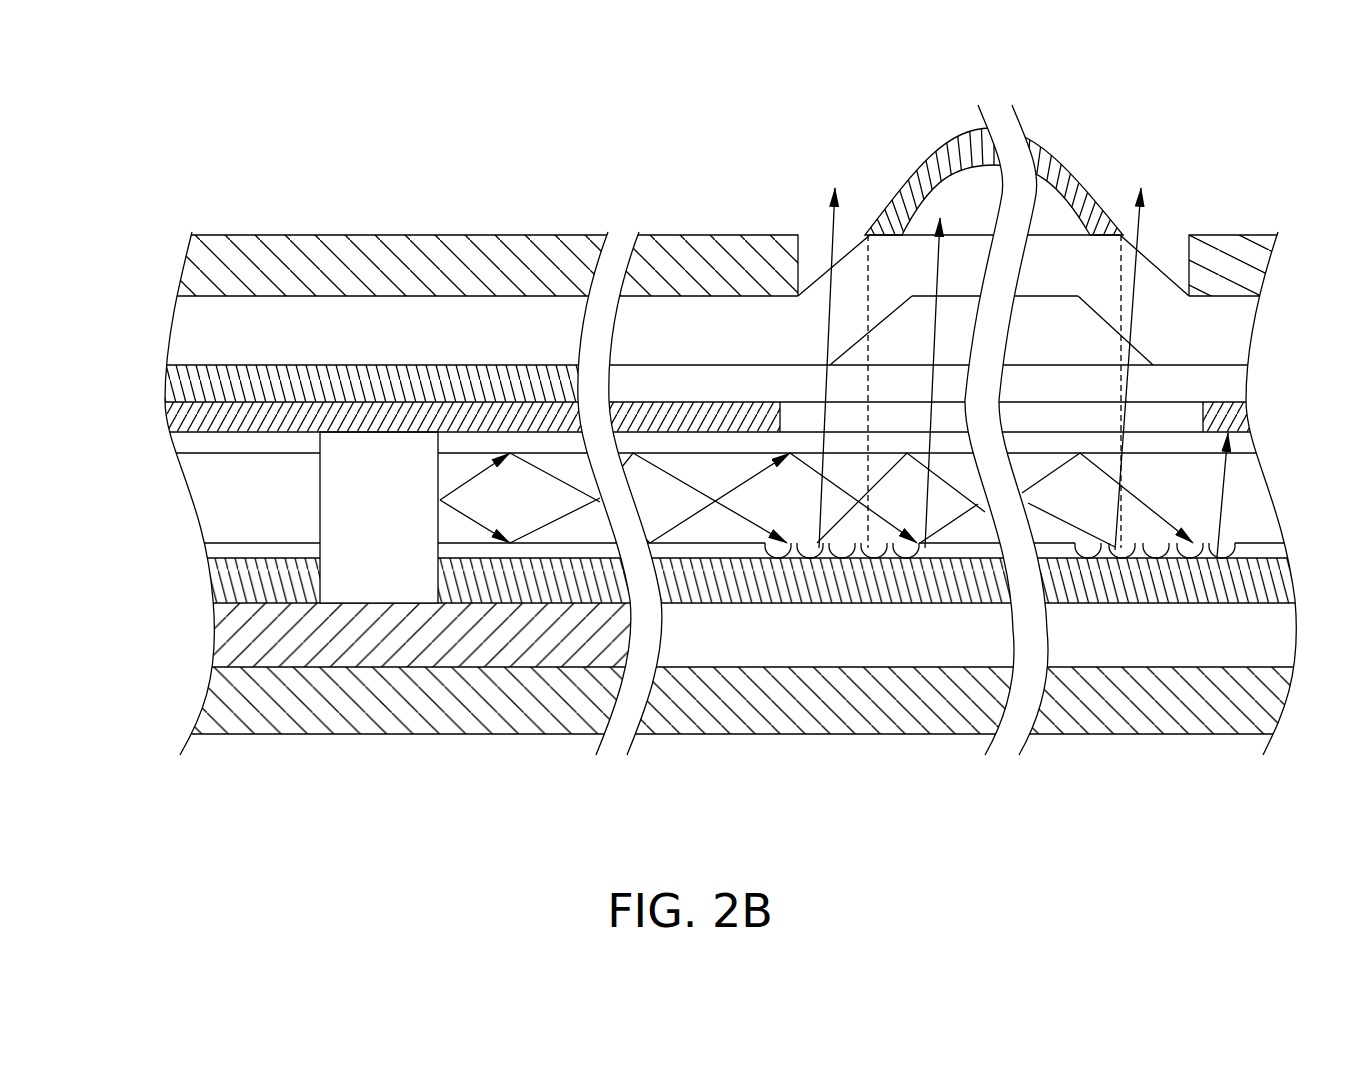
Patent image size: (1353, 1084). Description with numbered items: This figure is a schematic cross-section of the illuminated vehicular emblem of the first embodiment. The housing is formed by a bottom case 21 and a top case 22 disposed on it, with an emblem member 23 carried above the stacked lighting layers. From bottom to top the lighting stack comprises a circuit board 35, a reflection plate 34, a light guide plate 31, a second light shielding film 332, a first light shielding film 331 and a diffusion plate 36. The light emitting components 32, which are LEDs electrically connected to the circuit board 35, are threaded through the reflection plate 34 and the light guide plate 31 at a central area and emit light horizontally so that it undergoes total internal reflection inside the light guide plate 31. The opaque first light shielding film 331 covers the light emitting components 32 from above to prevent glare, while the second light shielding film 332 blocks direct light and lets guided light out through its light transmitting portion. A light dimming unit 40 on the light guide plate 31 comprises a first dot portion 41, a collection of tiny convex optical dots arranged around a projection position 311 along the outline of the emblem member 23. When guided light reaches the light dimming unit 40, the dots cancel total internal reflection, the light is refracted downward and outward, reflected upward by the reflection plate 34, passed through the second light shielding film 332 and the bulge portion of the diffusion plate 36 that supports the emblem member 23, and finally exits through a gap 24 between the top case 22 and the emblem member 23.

The bottom case 21 is at (210, 708).
The top case 22 is at (190, 275).
The emblem member 23 is at (936, 160).
The gap 24 is at (1157, 233).
The light guide plate 31 is at (195, 501).
The projection position 311 is at (1125, 533).
The light emitting components 32 is at (330, 520).
The first light shielding film 331 is at (195, 393).
The second light shielding film 332 is at (195, 428).
The reflection plate 34 is at (220, 588).
The circuit board 35 is at (225, 642).
The diffusion plate 36 is at (195, 338).
The light dimming unit 40 is at (768, 543).
The first dot portion 41 is at (1023, 372).